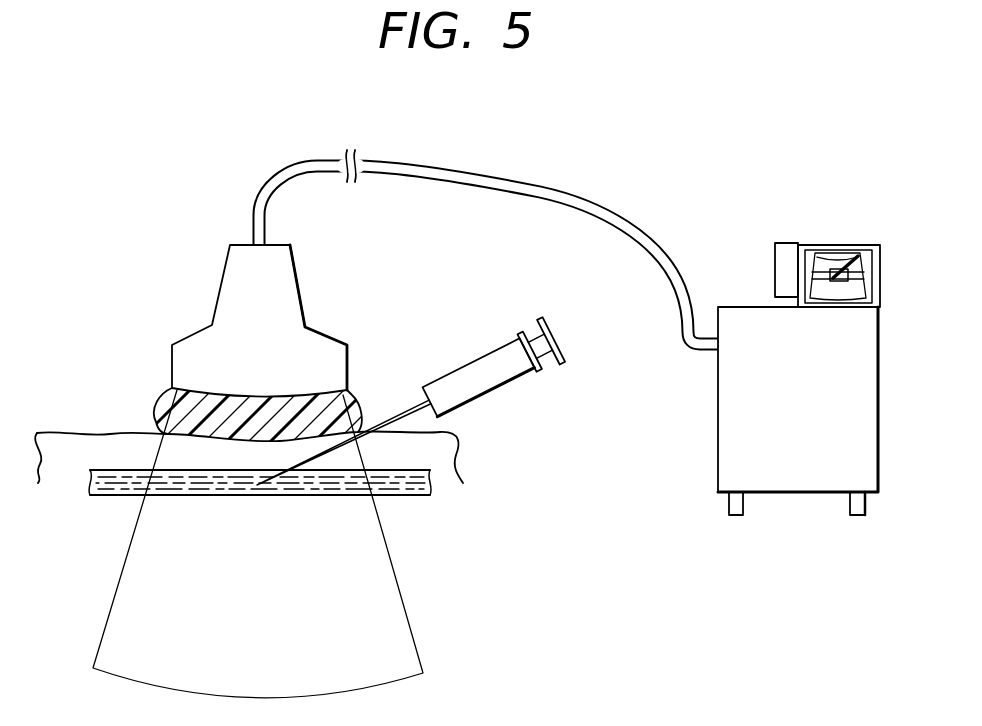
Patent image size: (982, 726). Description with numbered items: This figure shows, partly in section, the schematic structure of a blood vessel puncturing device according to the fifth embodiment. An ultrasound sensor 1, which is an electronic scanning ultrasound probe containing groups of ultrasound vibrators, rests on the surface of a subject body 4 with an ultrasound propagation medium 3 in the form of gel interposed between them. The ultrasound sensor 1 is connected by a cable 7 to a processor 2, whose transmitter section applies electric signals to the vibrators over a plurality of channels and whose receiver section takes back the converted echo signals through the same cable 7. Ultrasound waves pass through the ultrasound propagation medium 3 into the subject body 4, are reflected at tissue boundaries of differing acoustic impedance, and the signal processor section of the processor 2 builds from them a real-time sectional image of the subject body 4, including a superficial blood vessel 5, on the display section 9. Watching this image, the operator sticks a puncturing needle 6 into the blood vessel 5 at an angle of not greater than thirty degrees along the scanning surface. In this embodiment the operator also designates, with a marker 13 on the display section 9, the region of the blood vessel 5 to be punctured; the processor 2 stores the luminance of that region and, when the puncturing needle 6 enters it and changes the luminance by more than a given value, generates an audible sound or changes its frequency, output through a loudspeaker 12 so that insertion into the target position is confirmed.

The ultrasound sensor 1 is at (283, 285).
The processor 2 is at (727, 430).
The ultrasound propagation medium 3 is at (202, 407).
The subject body 4 is at (92, 443).
The superficial blood vessel 5 is at (413, 495).
The puncturing needle 6 is at (403, 412).
The cable 7 is at (437, 172).
The display section 9 is at (865, 257).
The loudspeaker 12 is at (787, 250).
The marker 13 is at (835, 251).